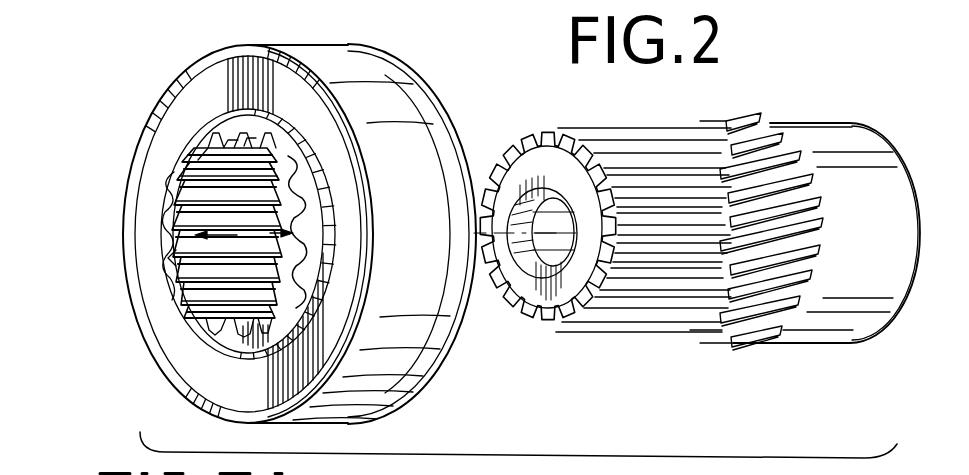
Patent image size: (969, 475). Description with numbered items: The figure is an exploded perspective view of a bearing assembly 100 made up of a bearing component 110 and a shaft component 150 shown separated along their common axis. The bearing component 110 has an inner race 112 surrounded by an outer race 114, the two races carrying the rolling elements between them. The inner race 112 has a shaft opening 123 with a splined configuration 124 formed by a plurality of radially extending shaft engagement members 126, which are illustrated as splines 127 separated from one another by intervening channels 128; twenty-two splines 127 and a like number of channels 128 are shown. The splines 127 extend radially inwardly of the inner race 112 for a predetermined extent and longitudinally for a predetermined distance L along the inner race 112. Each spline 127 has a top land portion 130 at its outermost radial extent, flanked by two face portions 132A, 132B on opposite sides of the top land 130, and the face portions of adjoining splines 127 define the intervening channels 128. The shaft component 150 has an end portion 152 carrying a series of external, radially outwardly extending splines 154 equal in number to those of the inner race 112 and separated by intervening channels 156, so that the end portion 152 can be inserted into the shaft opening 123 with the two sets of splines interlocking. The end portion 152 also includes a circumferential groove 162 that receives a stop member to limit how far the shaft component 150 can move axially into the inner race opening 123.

The bearing assembly 100 is at (648, 450).
The bearing component 110 is at (178, 66).
The inner race 112 is at (173, 188).
The outer race 114 is at (227, 61).
The shaft opening 123 is at (200, 163).
The splined configuration 124 is at (177, 258).
The shaft engagement members 126 is at (207, 128).
The splines 127 is at (303, 193).
The intervening channels 128 is at (306, 257).
The top land portion 130 is at (203, 289).
The face portion 132A is at (205, 278).
The face portion 132B is at (180, 238).
The predetermined distance L is at (232, 245).
The shaft component 150 is at (828, 140).
The end portion 152 is at (615, 333).
The splines 154 is at (528, 140).
The intervening channels 156 is at (550, 327).
The circumferential groove 162 is at (687, 138).